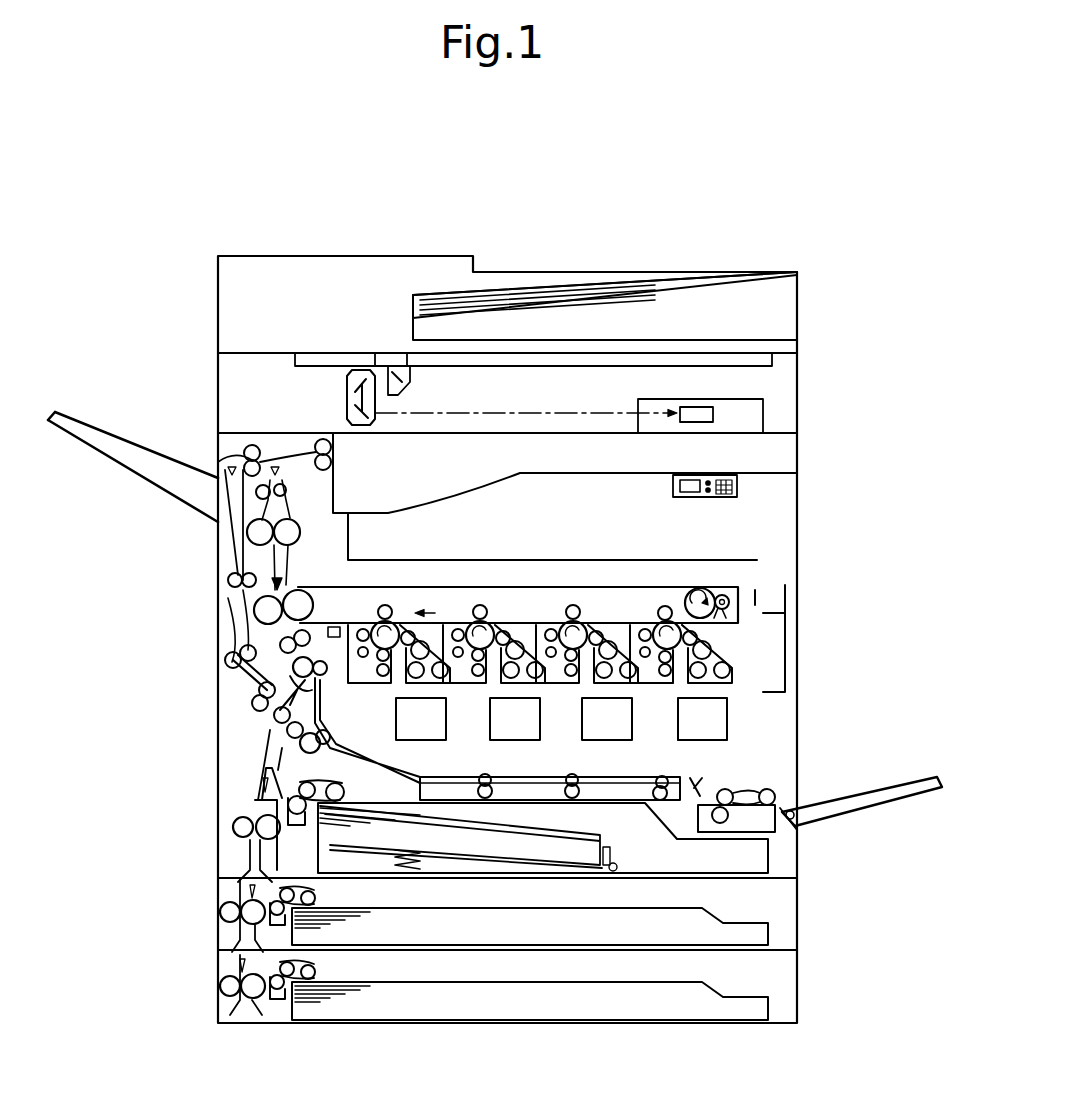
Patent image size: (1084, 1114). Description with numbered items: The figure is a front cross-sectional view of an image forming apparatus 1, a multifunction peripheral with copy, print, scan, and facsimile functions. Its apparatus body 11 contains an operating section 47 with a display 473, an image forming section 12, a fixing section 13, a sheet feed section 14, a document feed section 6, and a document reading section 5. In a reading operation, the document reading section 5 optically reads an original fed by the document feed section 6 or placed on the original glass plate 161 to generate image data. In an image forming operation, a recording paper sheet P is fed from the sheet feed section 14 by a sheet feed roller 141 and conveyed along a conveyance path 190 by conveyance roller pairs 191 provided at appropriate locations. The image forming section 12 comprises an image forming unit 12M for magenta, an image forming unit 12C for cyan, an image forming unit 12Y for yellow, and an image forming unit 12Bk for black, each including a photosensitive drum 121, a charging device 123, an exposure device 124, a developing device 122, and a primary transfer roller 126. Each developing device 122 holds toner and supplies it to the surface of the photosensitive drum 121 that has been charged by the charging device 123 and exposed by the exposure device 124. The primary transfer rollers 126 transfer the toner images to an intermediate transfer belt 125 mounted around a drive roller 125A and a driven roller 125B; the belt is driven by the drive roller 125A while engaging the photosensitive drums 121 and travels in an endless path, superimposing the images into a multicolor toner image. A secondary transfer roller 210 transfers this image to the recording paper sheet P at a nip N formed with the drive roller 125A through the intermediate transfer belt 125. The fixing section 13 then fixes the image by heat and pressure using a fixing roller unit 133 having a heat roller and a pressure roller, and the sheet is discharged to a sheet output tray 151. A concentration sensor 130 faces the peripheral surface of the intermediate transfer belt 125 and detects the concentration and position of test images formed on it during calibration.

The image forming apparatus 1 is at (877, 332).
The document reading section 5 is at (195, 388).
The document feed section 6 is at (632, 258).
The original glass plate 161 is at (652, 360).
The apparatus body 11 is at (803, 495).
The operating section 47 is at (779, 483).
The display section 473 is at (717, 478).
The sheet output tray 151 is at (370, 512).
The fixing roller unit 133 is at (218, 522).
The fixing section 13 is at (230, 535).
The nip N is at (240, 577).
The image forming section 12 is at (618, 637).
The image forming unit for black 12Bk is at (400, 605).
The image forming unit for yellow 12Y is at (483, 597).
The image forming unit for cyan 12C is at (582, 600).
The image forming unit for magenta 12M is at (667, 590).
The photosensitive drum 121 is at (678, 657).
The developing device 122 is at (733, 668).
The charging device 123 is at (648, 682).
The exposure device 124 is at (727, 722).
The intermediate transfer belt 125 is at (540, 583).
The drive roller 125A is at (297, 597).
The driven roller 125B is at (712, 589).
The primary transfer roller 126 is at (664, 606).
The conveyance path 190 is at (232, 612).
The secondary transfer roller 210 is at (250, 640).
The concentration sensor 130 is at (265, 656).
The conveyance roller pair 191 is at (262, 690).
The sheet feed roller 141 is at (262, 776).
The sheet feed section 14 is at (544, 911).
The recording paper sheet P is at (592, 822).